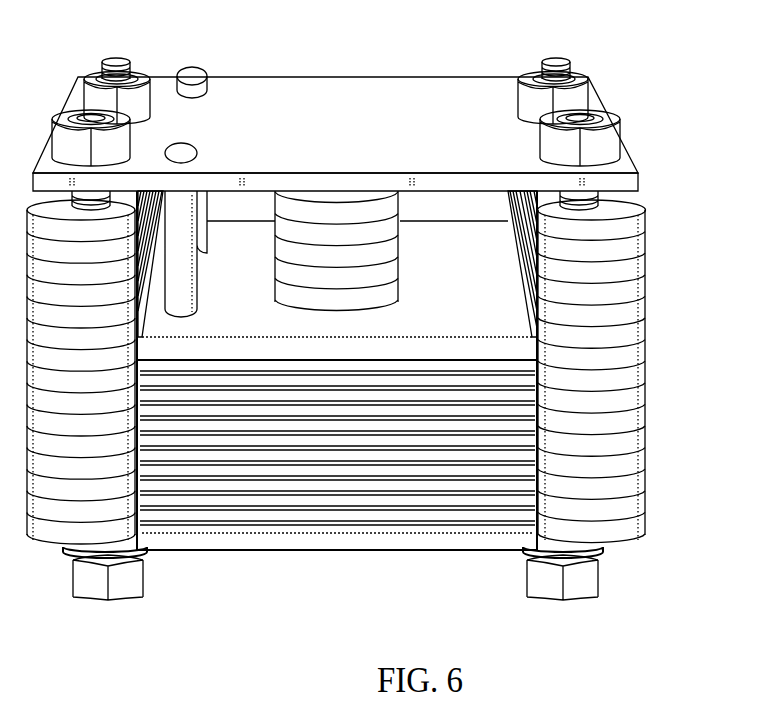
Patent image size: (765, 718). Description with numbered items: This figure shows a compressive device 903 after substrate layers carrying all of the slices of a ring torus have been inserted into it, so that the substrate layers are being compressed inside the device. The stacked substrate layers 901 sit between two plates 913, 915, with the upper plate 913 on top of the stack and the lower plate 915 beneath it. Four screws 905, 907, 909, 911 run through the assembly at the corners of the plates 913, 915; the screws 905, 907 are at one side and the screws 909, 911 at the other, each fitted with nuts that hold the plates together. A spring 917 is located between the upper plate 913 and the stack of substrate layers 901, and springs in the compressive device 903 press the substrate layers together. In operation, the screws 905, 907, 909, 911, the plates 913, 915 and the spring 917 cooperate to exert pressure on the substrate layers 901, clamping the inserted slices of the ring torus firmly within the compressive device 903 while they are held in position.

The stack of plates 901 is at (258, 458).
The compressive device 903 is at (687, 58).
The screw 905 is at (113, 57).
The screw 907 is at (82, 117).
The screw 909 is at (560, 57).
The screw 911 is at (588, 113).
The plate 913 is at (288, 107).
The plate 915 is at (393, 543).
The spring 917 is at (352, 213).